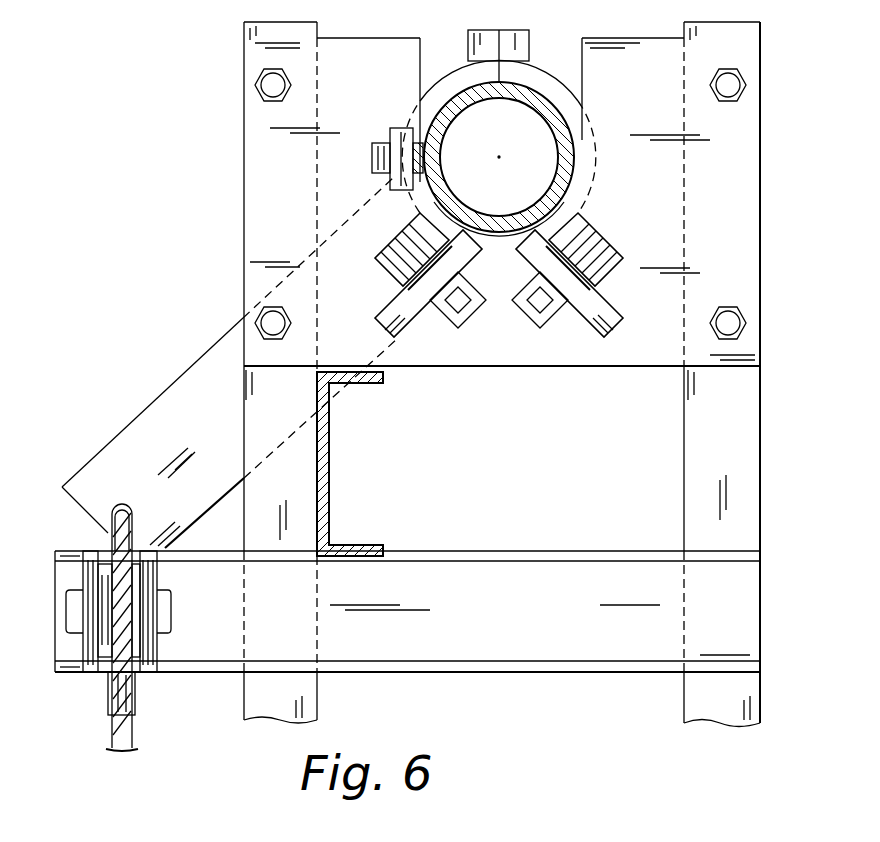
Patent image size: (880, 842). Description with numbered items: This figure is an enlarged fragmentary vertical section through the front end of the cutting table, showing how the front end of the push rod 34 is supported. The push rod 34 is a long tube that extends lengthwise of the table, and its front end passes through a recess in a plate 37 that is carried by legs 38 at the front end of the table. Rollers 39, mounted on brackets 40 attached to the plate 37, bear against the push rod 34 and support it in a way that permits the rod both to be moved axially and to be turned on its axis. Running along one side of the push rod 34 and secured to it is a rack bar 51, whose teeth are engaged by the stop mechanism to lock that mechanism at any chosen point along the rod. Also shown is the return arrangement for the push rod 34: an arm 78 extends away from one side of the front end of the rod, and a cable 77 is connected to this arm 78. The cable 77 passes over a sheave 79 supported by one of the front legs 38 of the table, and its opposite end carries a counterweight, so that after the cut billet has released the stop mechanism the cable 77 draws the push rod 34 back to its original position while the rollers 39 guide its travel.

The push rod 34 is at (552, 115).
The plate 37 is at (633, 352).
The legs 38 is at (263, 429).
The rollers 39 is at (385, 262).
The brackets 40 is at (583, 313).
The rack bar 51 is at (424, 158).
The cable 77 is at (118, 731).
The arm 78 is at (125, 447).
The sheave 79 is at (135, 517).